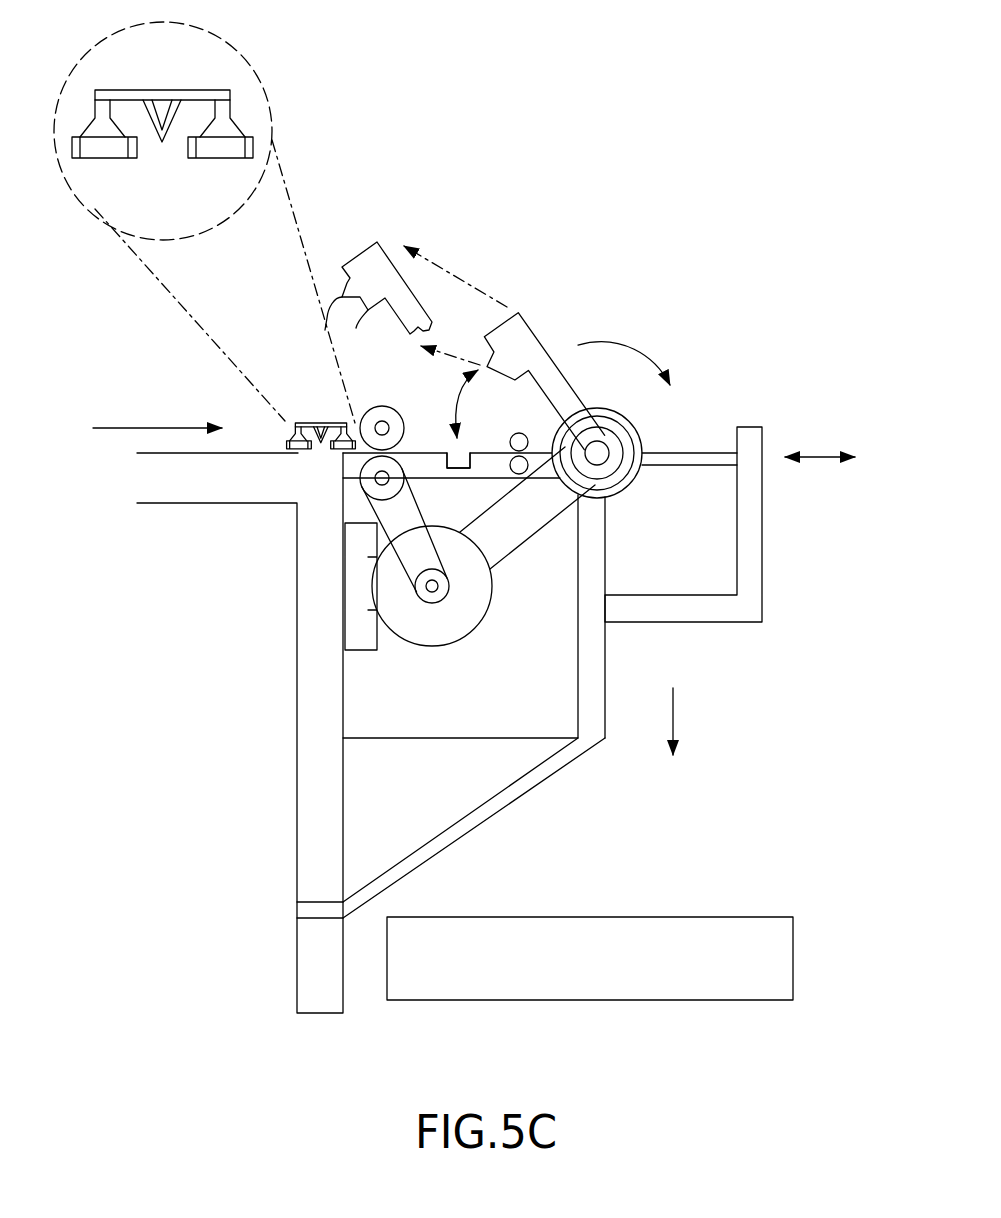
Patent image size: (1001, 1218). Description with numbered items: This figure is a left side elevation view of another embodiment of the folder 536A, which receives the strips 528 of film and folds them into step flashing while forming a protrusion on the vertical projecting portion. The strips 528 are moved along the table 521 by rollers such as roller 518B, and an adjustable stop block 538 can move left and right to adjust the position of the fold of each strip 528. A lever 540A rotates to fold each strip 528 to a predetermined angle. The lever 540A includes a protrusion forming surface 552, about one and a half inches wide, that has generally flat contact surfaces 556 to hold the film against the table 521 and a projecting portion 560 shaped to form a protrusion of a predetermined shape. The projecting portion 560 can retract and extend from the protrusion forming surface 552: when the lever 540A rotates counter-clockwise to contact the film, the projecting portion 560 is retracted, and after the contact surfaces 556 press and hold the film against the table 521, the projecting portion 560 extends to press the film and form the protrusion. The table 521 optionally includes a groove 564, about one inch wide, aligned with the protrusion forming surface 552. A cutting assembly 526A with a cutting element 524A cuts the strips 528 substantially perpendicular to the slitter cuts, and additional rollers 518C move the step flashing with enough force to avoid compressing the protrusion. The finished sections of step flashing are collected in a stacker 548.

The roller 518B is at (383, 417).
The additional rollers 518C is at (521, 470).
The table 521 is at (225, 490).
The cutting element 524A is at (160, 150).
The cutting assembly 526A is at (228, 90).
The strips 528 is at (263, 448).
The folder 536A is at (724, 203).
The adjustable stop block 538 is at (763, 427).
The lever 540A is at (542, 359).
The stacker 548 is at (652, 917).
The protrusion forming surface 552 is at (324, 265).
The contact surfaces 556 is at (356, 326).
The projecting portion 560 is at (323, 328).
The groove 564 is at (465, 440).